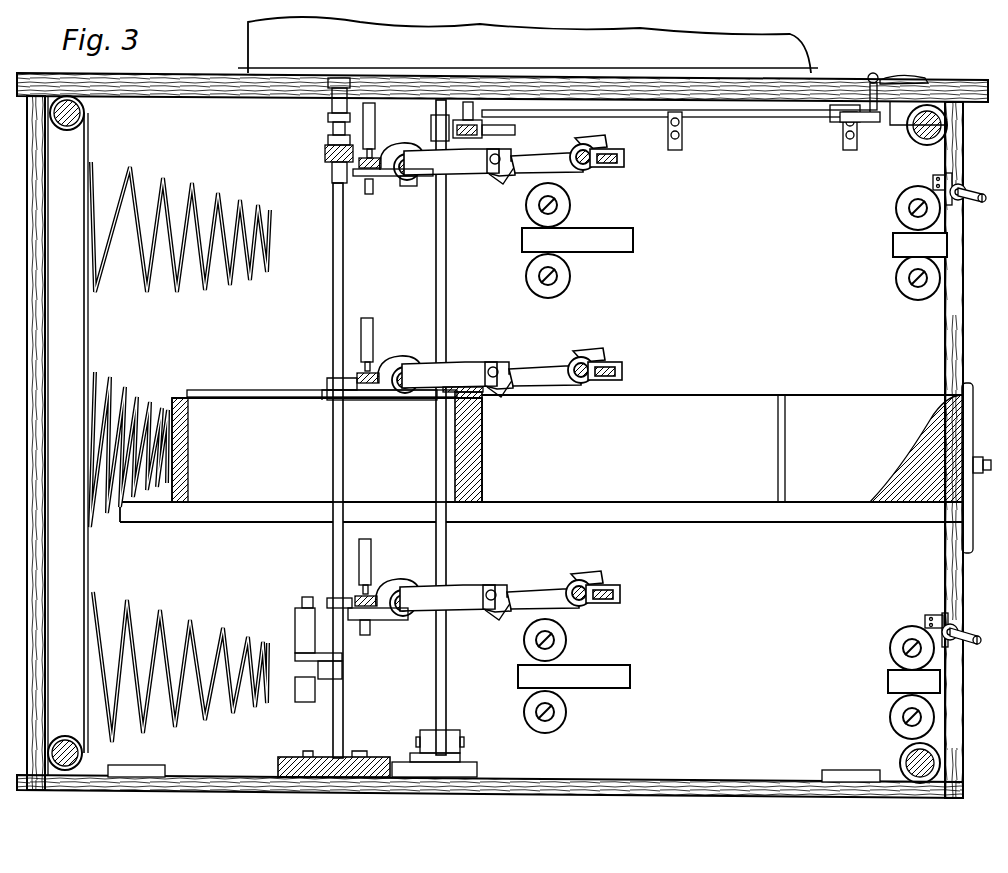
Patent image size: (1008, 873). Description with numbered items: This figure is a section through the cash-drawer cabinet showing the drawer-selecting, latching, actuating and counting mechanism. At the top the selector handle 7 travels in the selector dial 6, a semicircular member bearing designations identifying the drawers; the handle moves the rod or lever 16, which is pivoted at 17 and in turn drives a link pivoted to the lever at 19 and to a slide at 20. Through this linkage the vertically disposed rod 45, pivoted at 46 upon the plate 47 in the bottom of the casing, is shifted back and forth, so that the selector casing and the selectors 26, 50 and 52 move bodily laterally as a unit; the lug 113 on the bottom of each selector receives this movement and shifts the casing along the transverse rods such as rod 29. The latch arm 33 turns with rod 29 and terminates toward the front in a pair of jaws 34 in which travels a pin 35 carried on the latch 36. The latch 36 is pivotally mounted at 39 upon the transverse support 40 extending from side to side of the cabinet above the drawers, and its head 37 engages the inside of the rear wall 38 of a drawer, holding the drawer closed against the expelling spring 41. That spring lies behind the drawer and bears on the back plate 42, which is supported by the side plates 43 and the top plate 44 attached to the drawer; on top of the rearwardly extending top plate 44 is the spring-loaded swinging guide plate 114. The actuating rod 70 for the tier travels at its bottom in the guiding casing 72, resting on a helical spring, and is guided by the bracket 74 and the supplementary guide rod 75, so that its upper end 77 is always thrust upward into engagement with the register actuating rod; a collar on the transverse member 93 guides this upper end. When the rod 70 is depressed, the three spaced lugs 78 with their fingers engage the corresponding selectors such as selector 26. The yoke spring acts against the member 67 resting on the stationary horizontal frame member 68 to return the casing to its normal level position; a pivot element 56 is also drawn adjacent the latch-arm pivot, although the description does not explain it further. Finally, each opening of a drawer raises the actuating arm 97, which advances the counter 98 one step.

The selector dial 6 is at (868, 80).
The selector handle 7 is at (908, 80).
The rod or lever 16 is at (745, 117).
The pivot 17 is at (685, 117).
The pivot 19 is at (480, 112).
The pivot 20 is at (452, 114).
The selector 26 is at (380, 175).
The rod 29 is at (415, 182).
The latch arm 33 is at (455, 172).
The jaws 34 is at (503, 177).
The pin 35 is at (497, 153).
The latch 36 is at (522, 168).
The head 37 is at (485, 180).
The rear wall 38 is at (485, 432).
The pivot 39 is at (583, 148).
The transverse support 40 is at (618, 170).
The expelling spring 41 is at (218, 185).
The back plate 42 is at (188, 430).
The side plates 43 is at (327, 450).
The top plate 44 is at (245, 398).
The vertically disposed rod 45 is at (446, 290).
The pivot 46 is at (460, 745).
The plate 47 is at (472, 772).
The selector 50 is at (380, 390).
The selector 52 is at (375, 615).
The pivot 56 is at (410, 365).
The member 67 is at (380, 152).
The stationary horizontal frame member 68 is at (366, 320).
The actuating rod 70 is at (333, 292).
The guiding casing 72 is at (352, 757).
The bracket 74 is at (295, 632).
The supplementary guide rod 75 is at (300, 665).
The upper end 77 is at (345, 108).
The spaced lugs 78 is at (326, 172).
The transverse member 93 is at (462, 138).
The actuating arm 97 is at (972, 200).
The counter 98 is at (960, 190).
The lug 113 is at (400, 185).
The swinging guide plate 114 is at (200, 390).